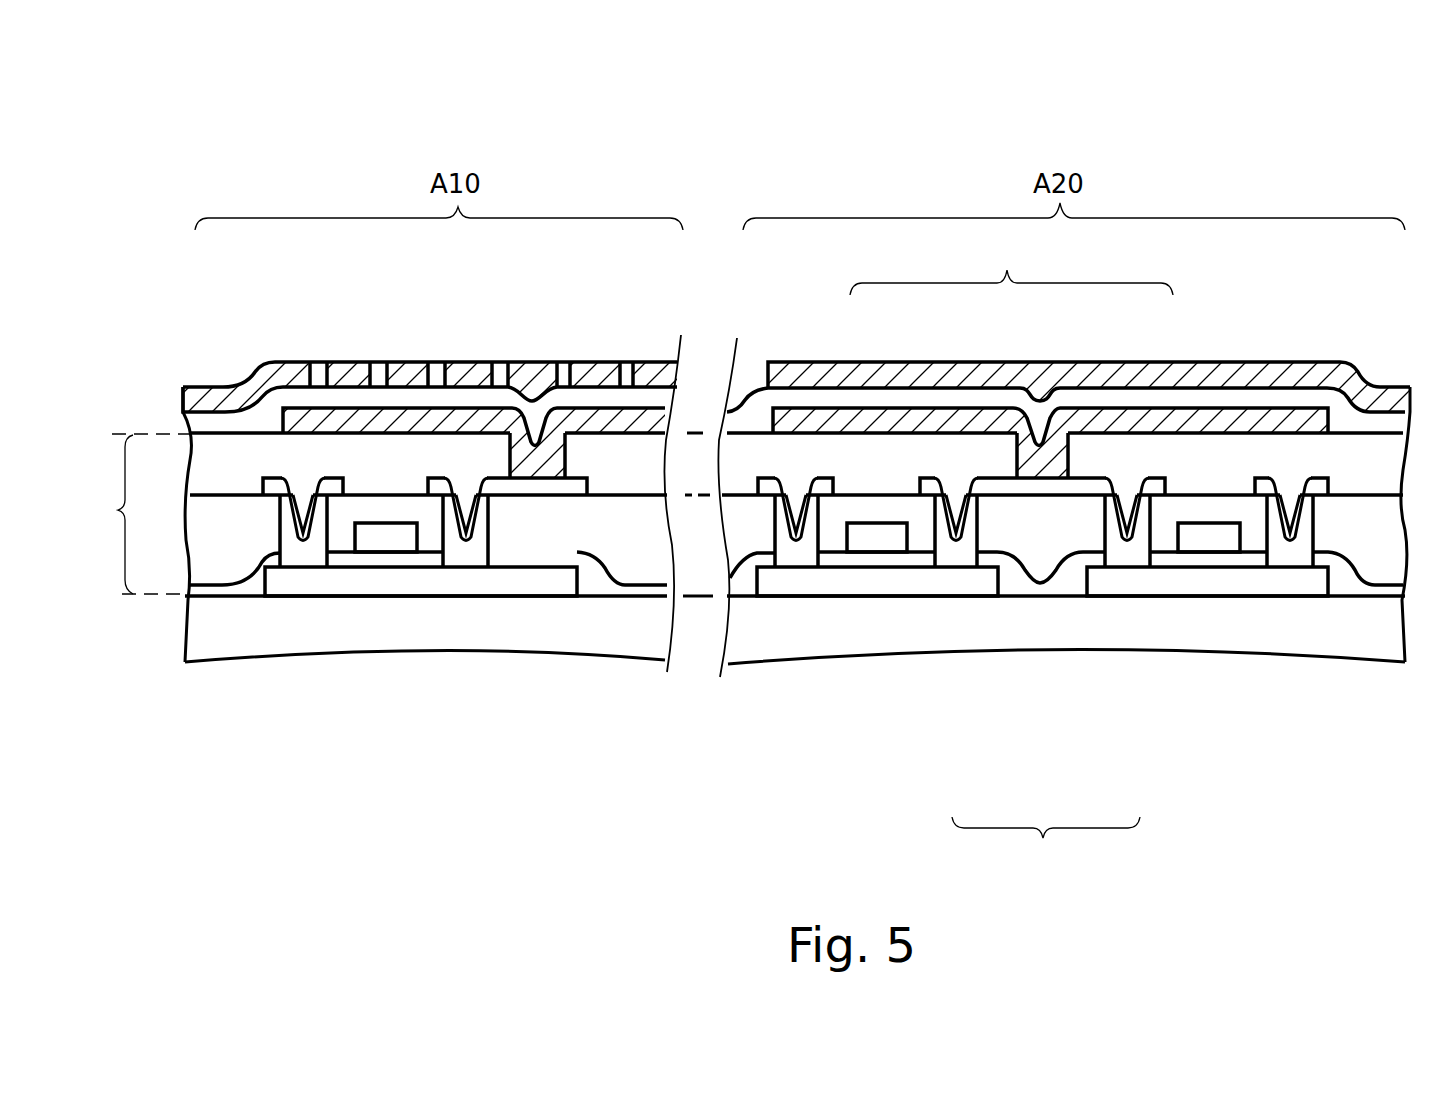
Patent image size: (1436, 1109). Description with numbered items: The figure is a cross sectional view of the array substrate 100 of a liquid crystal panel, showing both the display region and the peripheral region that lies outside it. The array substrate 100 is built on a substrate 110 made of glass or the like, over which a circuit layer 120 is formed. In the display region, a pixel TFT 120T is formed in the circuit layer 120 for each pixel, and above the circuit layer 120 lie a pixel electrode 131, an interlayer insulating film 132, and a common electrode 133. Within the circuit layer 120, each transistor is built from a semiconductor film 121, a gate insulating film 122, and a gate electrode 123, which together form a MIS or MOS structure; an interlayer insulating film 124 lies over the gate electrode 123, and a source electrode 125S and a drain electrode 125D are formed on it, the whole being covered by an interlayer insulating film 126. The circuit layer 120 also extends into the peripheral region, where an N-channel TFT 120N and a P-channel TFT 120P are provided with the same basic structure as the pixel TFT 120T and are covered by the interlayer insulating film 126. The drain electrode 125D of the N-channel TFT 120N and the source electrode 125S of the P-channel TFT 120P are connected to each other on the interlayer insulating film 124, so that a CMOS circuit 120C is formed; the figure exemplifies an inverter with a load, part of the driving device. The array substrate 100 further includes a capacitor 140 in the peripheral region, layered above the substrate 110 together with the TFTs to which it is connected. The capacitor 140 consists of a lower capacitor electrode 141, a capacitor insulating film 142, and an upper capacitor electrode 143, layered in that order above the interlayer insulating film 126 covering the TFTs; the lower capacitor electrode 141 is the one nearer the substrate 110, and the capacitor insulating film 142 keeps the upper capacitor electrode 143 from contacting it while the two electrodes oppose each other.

The array substrate 100 is at (183, 149).
The substrate 110 is at (760, 643).
The circuit layer 120 is at (126, 514).
The pixel TFT 120T is at (552, 644).
The N-channel TFT 120N is at (995, 643).
The P-channel TFT 120P is at (1070, 635).
The CMOS circuit 120C is at (1046, 848).
The semiconductor film 121 is at (362, 583).
The gate insulating film 122 is at (428, 560).
The gate electrode 123 is at (385, 540).
The interlayer insulating film 124 is at (223, 555).
The source electrode 125S is at (303, 557).
The drain electrode 125D is at (463, 557).
The interlayer insulating film 126 is at (737, 458).
The pixel electrode 131 is at (347, 417).
The interlayer insulating film 132 is at (408, 398).
The common electrode 133 is at (532, 368).
The capacitor 140 is at (1011, 267).
The lower capacitor electrode 141 is at (888, 420).
The capacitor insulating film 142 is at (970, 398).
The upper capacitor electrode 143 is at (1112, 373).